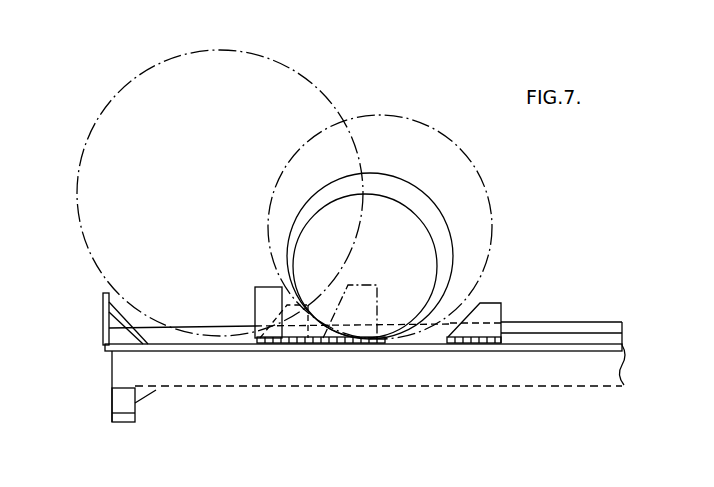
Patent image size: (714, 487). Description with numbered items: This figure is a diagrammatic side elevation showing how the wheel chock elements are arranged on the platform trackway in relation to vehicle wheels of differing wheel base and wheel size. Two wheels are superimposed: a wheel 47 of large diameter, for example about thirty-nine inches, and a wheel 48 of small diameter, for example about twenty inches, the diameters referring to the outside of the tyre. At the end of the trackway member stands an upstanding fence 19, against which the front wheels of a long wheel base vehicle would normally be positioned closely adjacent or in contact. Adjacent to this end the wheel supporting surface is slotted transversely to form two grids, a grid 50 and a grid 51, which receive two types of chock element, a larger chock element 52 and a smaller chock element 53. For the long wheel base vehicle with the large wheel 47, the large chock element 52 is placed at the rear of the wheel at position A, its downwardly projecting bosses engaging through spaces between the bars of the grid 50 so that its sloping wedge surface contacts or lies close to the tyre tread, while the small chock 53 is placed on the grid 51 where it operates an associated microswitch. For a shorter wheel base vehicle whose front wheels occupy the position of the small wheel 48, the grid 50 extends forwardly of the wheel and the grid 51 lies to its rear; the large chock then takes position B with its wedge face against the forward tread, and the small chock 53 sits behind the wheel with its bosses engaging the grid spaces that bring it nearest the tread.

The wheel of large diameter 47 is at (157, 64).
The wheel of small diameter 48 is at (432, 258).
The upstanding fence 19 is at (103, 308).
The grid 50 is at (292, 352).
The grid 51 is at (480, 342).
The larger chock element 52 is at (263, 316).
The smaller chock element 53 is at (503, 305).
The position of large chock for large wheels A is at (370, 287).
The position of large chock for small wheels B is at (269, 292).